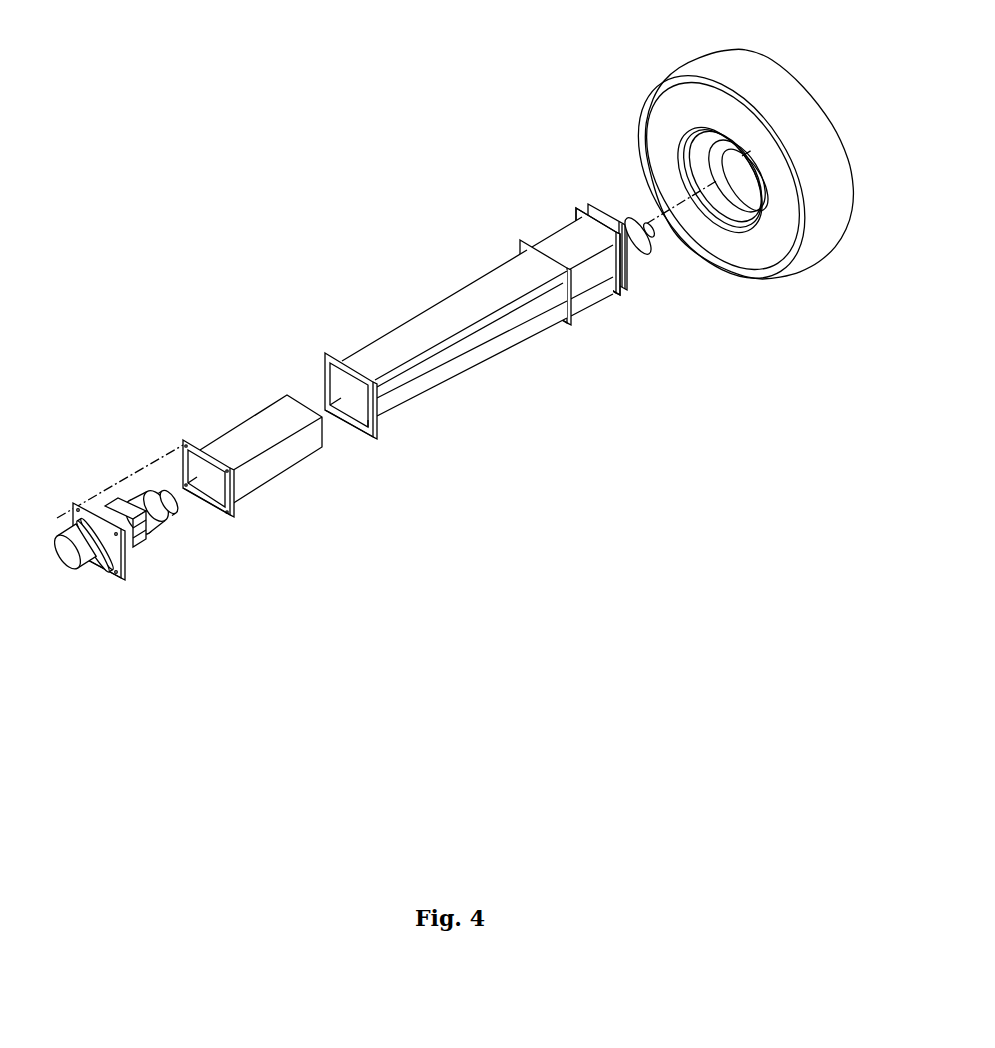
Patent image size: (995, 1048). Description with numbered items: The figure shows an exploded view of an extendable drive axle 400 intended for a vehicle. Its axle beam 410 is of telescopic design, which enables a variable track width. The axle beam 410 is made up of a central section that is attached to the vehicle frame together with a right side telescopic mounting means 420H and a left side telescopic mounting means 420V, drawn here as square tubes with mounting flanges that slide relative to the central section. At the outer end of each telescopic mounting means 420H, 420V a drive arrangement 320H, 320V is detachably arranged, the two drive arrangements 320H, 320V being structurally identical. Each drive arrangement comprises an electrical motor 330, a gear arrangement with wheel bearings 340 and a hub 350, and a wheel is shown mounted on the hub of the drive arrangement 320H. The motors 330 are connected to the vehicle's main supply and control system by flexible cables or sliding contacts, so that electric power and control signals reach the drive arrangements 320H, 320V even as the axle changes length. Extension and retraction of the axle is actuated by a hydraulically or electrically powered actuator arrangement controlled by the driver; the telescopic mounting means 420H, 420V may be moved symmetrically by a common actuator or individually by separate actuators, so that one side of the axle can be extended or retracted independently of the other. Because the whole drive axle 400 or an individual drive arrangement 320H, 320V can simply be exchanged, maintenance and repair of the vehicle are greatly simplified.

The extendable drive axle 400 is at (197, 89).
The axle beam 410 is at (371, 239).
The right side telescopic mounting means 420H is at (569, 232).
The left side telescopic mounting means 420V is at (249, 414).
The drive arrangement 320H is at (590, 167).
The drive arrangement 320V is at (163, 479).
The electrical motor 330 is at (165, 505).
The gear arrangement with wheel bearings 340 is at (136, 543).
The hub 350 is at (77, 568).